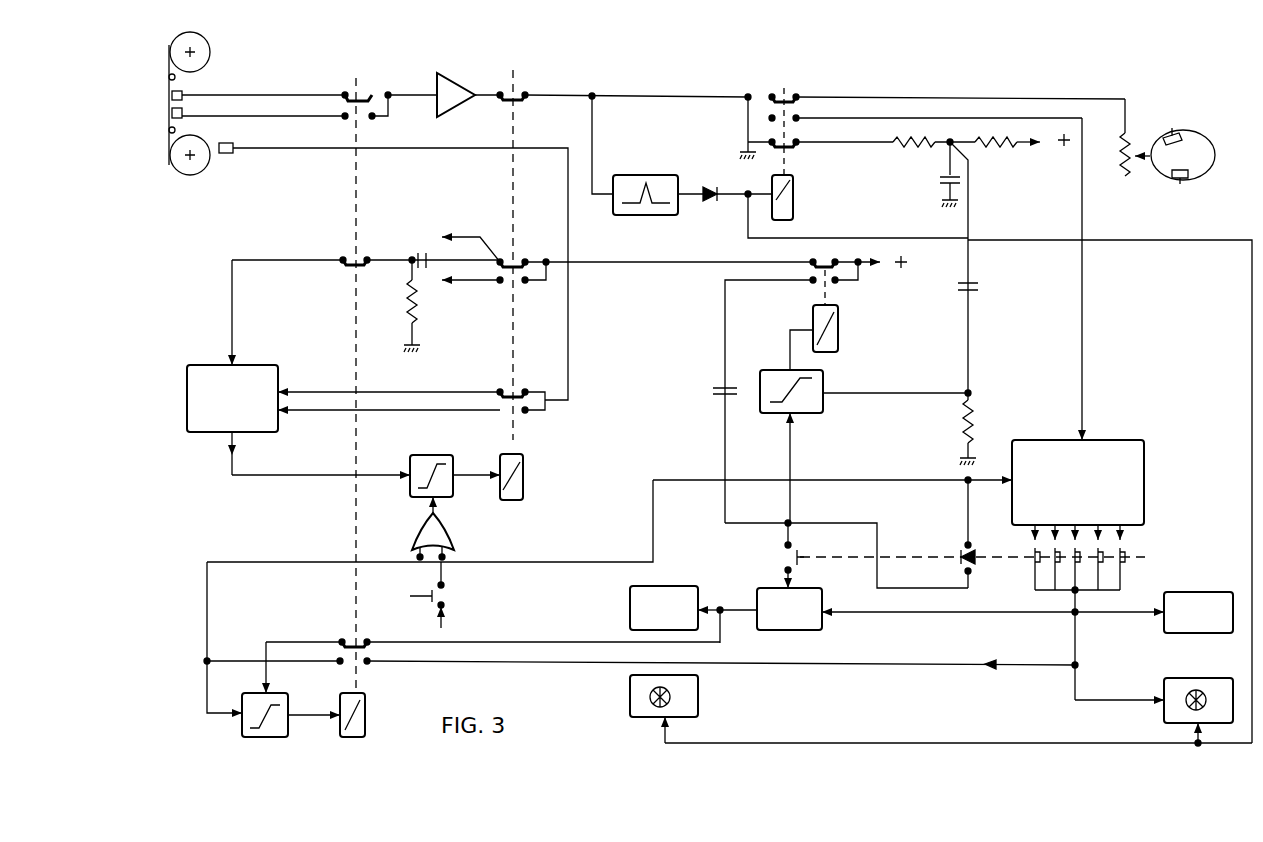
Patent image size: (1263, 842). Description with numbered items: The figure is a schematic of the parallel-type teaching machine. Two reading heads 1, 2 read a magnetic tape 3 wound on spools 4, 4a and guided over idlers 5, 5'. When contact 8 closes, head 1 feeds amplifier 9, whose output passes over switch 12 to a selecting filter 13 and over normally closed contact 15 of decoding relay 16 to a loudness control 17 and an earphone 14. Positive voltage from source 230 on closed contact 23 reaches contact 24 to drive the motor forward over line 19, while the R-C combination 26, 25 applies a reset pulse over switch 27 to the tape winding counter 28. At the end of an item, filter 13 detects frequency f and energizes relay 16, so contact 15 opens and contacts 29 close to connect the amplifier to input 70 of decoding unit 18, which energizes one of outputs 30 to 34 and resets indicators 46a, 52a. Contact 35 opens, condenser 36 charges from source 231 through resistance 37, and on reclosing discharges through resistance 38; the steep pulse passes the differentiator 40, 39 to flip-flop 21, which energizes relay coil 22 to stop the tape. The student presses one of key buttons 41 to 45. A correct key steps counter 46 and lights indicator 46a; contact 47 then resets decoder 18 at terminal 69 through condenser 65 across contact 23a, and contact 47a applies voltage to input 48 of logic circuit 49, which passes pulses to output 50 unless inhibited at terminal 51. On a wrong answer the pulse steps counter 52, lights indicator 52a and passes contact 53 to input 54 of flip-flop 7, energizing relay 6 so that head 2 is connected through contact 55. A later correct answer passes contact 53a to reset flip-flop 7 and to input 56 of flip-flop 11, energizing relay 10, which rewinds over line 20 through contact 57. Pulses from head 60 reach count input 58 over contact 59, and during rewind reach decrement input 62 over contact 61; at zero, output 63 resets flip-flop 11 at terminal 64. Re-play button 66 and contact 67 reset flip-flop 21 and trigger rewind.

The reading head 1 is at (184, 92).
The reading head 2 is at (184, 114).
The magnetic tape 3 is at (167, 100).
The spool 4 is at (211, 50).
The spool 4a is at (207, 166).
The idler 5 is at (157, 77).
The idler 5' is at (157, 129).
The relay 6 is at (365, 732).
The flip-flop 7 is at (288, 733).
The contact 8 is at (368, 84).
The amplifier 9 is at (452, 85).
The relay 10 is at (523, 466).
The flip-flop 11 is at (418, 455).
The switch 12 is at (515, 92).
The selecting filter 13 is at (632, 174).
The earphone 14 is at (1150, 170).
The contact 15 is at (790, 90).
The decoding relay 16 is at (794, 204).
The loudness control 17 is at (1130, 138).
The decoding unit 18 is at (1128, 443).
The line 19 is at (471, 235).
The line 20 is at (472, 293).
The flip-flop 21 is at (823, 381).
The relay coil 22 is at (844, 304).
The contact 23 is at (822, 262).
The contact 23a is at (858, 284).
The contact 24 is at (526, 258).
The condenser 25 is at (420, 252).
The resistance 26 is at (425, 312).
The switch 27 is at (357, 258).
The counter 28 is at (262, 362).
The contacts 29 is at (769, 120).
The output 30 is at (1033, 545).
The output 34 is at (1127, 540).
The contact 35 is at (797, 150).
The condenser 36 is at (940, 189).
The resistance 37 is at (1002, 148).
The resistance 38 is at (905, 146).
The condenser 39 is at (977, 286).
The resistance 40 is at (975, 408).
The key button 41 is at (1063, 595).
The key button 45 is at (1125, 568).
The correct counter 46 is at (1201, 598).
The indicator 46a is at (1197, 687).
The contact 47 is at (970, 586).
The contact 47a is at (788, 560).
The input 48 is at (792, 578).
The logic circuit 49 is at (822, 630).
The output 50 is at (752, 625).
The terminal 51 is at (833, 607).
The counter 52 is at (682, 591).
The indicator 52a is at (700, 696).
The contact 53 is at (358, 636).
The contact 53a is at (365, 670).
The input 54 is at (270, 682).
The contact 55 is at (372, 122).
The input 56 is at (452, 532).
The contact 57 is at (520, 290).
The input 58 is at (283, 385).
The contact 59 is at (522, 390).
The head 60 is at (234, 153).
The contact 61 is at (520, 420).
The decrement input 62 is at (283, 415).
The output 63 is at (238, 445).
The re-set terminal 64 is at (409, 471).
The condenser 65 is at (713, 388).
The re-play button 66 is at (408, 598).
The contact 67 is at (449, 597).
The terminal 69 is at (1010, 480).
The input 70 is at (1084, 438).
The source 230 is at (923, 262).
The source 231 is at (1061, 154).